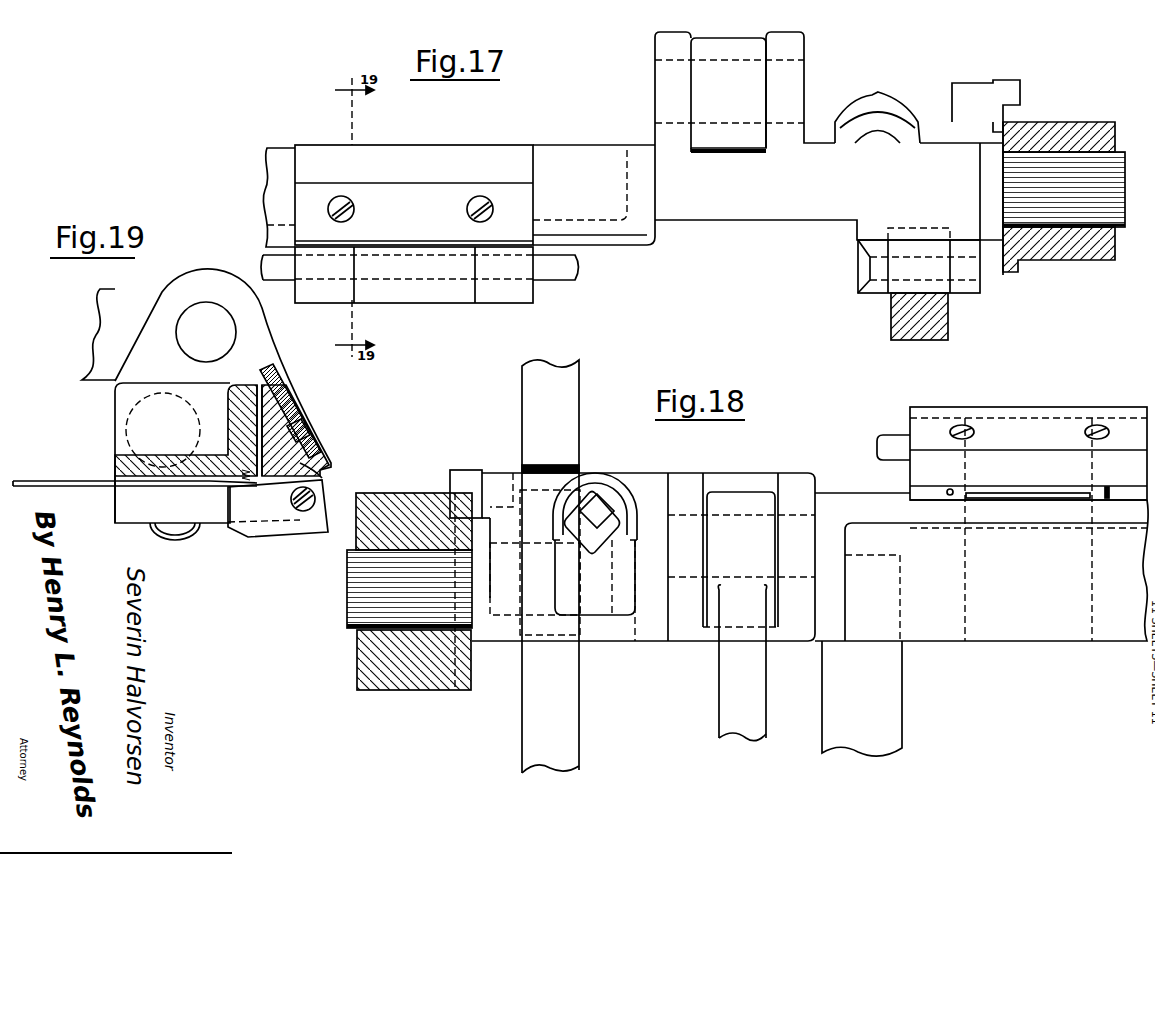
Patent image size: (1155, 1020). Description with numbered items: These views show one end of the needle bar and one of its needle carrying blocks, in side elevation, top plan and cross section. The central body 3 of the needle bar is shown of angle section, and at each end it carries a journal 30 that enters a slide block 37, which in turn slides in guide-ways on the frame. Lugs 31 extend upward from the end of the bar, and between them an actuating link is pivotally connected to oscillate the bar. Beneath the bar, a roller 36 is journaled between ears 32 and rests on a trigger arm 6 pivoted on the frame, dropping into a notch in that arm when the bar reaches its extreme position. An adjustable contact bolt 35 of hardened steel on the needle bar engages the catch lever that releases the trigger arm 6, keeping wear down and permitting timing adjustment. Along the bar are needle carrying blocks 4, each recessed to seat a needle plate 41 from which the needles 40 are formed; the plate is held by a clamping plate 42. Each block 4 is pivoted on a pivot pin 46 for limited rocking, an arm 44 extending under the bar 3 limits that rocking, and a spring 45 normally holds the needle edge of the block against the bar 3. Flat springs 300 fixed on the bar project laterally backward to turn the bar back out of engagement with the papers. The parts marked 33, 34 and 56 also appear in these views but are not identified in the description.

In FIG. 17, the central body of the needle bar 3 is at (598, 160).
In FIG. 19, the central body of the needle bar 3 is at (235, 412).
In FIG. 18, the central body of the needle bar 3 is at (810, 557).
In FIG. 19, the needle carrying block 4 is at (300, 464).
In FIG. 18, the needle carrying block 4 is at (927, 498).
In FIG. 17, the trigger arm 6 is at (948, 328).
In FIG. 18, the trigger arm 6 is at (580, 694).
In FIG. 17, the journal 30 is at (1075, 142).
In FIG. 19, the journal 30 is at (120, 402).
In FIG. 18, the journal 30 is at (355, 592).
In FIG. 17, the lugs 31 is at (660, 47).
In FIG. 19, the lugs 31 is at (223, 287).
In FIG. 18, the lugs 31 is at (692, 485).
In FIG. 17, the ears 32 is at (858, 265).
In FIG. 17, the lower plate 33 is at (420, 300).
In FIG. 19, the lower plate 33 is at (213, 516).
In FIG. 18, the lower plate 33 is at (965, 574).
In FIG. 17, the key 34 is at (905, 127).
In FIG. 18, the key 34 is at (630, 490).
In FIG. 17, the adjustable contact bolt 35 is at (905, 80).
In FIG. 18, the adjustable contact bolt 35 is at (600, 502).
In FIG. 17, the roller 36 is at (905, 288).
In FIG. 19, the roller 36 is at (200, 538).
In FIG. 18, the roller 36 is at (482, 492).
In FIG. 17, the slide block 37 is at (1088, 262).
In FIG. 18, the slide block 37 is at (440, 690).
In FIG. 17, the needles 40 is at (485, 143).
In FIG. 19, the needles 40 is at (262, 371).
In FIG. 18, the needles 40 is at (960, 497).
In FIG. 19, the needle plate 41 is at (286, 396).
In FIG. 18, the needle plate 41 is at (1038, 495).
In FIG. 17, the clamping plate 42 is at (410, 209).
In FIG. 19, the clamping plate 42 is at (306, 406).
In FIG. 18, the clamping plate 42 is at (1058, 430).
In FIG. 17, the arm 44 is at (315, 298).
In FIG. 19, the arm 44 is at (280, 531).
In FIG. 18, the arm 44 is at (915, 530).
In FIG. 19, the spring 45 is at (243, 481).
In FIG. 17, the pivot pin 46 is at (580, 267).
In FIG. 19, the pivot pin 46 is at (290, 500).
In FIG. 18, the pivot pin 46 is at (890, 437).
In FIG. 17, the slot 56 is at (728, 94).
In FIG. 19, the slot 56 is at (100, 300).
In FIG. 18, the slot 56 is at (745, 500).
In FIG. 19, the flat spring 300 is at (90, 488).
In FIG. 18, the flat spring 300 is at (890, 680).